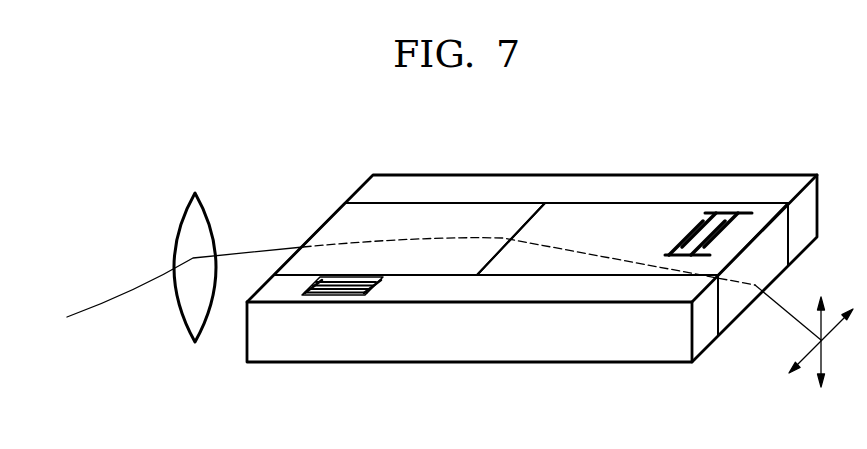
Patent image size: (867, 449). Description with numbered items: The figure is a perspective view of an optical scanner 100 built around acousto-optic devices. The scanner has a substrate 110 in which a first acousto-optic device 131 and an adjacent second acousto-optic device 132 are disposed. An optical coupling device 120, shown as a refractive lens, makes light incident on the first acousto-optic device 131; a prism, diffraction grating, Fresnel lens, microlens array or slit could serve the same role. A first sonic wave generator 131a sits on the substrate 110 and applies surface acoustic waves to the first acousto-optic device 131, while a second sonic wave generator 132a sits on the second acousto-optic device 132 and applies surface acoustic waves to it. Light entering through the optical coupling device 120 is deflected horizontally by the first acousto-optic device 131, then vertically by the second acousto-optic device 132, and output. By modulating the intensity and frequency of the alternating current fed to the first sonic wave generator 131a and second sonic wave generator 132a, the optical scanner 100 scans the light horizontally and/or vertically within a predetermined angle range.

The optical scanner 100 is at (532, 280).
The substrate 110 is at (577, 345).
The optical coupling device 120 is at (195, 342).
The first acousto-optic device 131 is at (443, 213).
The second acousto-optic device 132 is at (623, 213).
The first sonic wave generator 131a is at (372, 295).
The second sonic wave generator 132a is at (732, 213).